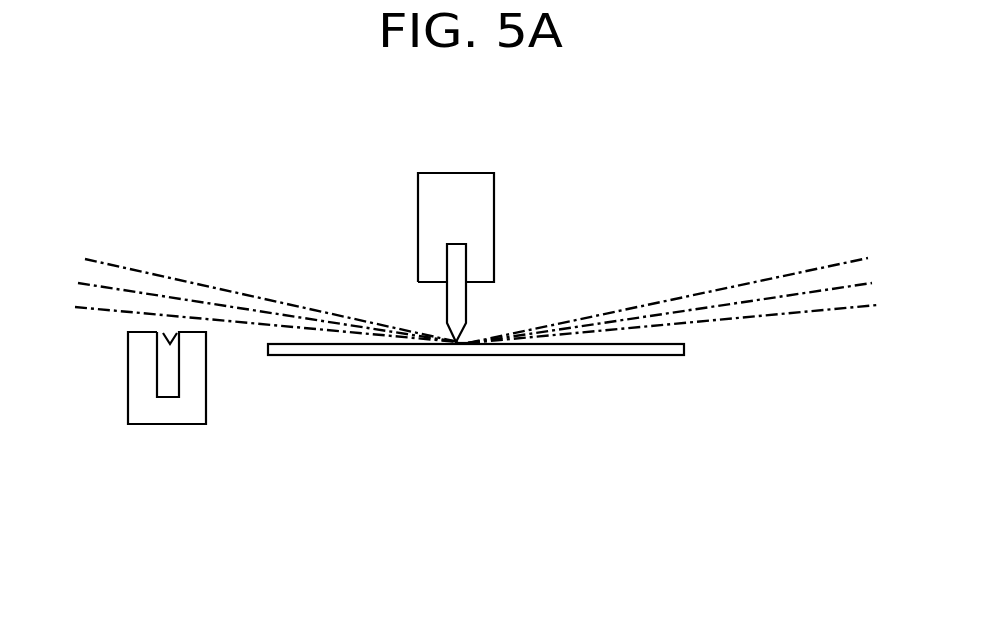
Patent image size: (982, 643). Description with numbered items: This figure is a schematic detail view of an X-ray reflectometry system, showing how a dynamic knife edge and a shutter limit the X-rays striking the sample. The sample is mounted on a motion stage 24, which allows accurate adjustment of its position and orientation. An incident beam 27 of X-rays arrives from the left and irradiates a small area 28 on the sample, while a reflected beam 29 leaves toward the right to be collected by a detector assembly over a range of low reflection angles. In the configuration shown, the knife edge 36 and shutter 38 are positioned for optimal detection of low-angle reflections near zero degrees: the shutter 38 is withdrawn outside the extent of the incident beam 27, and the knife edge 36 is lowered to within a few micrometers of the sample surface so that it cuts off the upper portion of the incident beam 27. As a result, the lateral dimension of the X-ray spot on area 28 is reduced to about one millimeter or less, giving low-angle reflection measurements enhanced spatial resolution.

The motion stage 24 is at (623, 353).
The incident beam 27 is at (158, 277).
The area 28 is at (469, 356).
The reflected beam 29 is at (787, 277).
The dynamic knife edge 36 is at (448, 307).
The shutter 38 is at (165, 334).